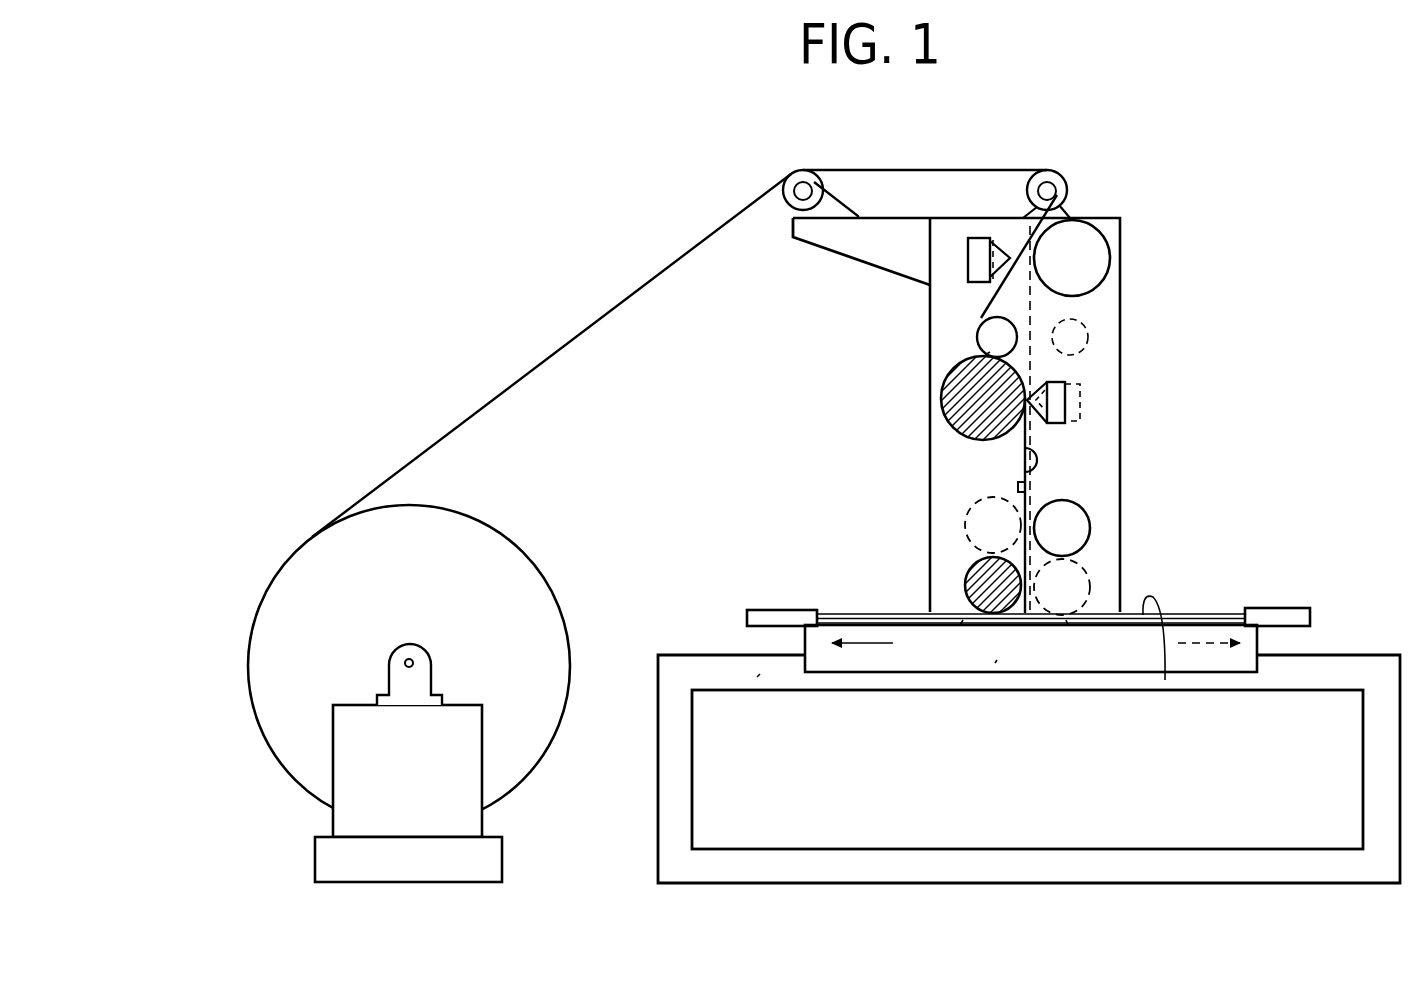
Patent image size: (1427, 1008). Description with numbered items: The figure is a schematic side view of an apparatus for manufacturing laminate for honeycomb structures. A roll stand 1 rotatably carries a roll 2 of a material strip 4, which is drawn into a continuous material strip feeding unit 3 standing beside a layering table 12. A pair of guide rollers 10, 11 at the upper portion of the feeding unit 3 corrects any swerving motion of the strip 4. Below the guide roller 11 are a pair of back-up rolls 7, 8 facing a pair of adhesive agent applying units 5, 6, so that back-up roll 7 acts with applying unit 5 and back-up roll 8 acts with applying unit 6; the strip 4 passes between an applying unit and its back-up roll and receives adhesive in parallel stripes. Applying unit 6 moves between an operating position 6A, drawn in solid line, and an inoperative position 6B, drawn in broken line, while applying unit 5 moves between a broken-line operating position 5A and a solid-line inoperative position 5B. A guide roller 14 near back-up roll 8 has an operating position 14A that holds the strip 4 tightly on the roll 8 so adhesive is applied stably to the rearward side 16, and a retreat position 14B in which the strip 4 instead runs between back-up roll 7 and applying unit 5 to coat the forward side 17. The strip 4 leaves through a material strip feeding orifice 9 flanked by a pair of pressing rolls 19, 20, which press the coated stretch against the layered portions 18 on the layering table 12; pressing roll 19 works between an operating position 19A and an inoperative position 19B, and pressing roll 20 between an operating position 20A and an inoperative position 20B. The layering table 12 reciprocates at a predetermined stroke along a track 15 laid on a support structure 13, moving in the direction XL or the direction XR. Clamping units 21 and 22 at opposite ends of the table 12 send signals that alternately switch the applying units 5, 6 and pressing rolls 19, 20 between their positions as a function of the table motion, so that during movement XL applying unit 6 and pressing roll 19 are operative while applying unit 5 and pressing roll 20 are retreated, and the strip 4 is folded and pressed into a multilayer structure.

The roll stand 1 is at (358, 815).
The roll 2 is at (278, 625).
The continuous material strip feeding unit 3 is at (1114, 213).
The material strip 4 is at (908, 170).
The adhesive agent applying unit 5 is at (923, 219).
The operating position 5A is at (1006, 245).
The inoperative position 5B is at (966, 279).
The adhesive agent applying unit 6 is at (1138, 388).
The operating position 6A is at (1067, 397).
The inoperative position 6B is at (1082, 416).
The back-up roll 7 is at (1088, 252).
The back-up roll 8 is at (955, 400).
The material strip feeding orifice 9 is at (1032, 625).
The guide roller 10 is at (797, 172).
The guide roller 11 is at (1053, 172).
The layering table 12 is at (995, 663).
The support structure 13 is at (757, 677).
The guide roller 14 is at (975, 337).
The operating position 14A is at (985, 355).
The inoperative position 14B is at (1088, 337).
The track 15 is at (718, 653).
The side 16 is at (1020, 462).
The side 17 is at (1030, 478).
The layered portions 18 is at (1165, 680).
The pressing roll 19 is at (955, 563).
The operating position 19A is at (960, 625).
The inoperative position 19B is at (966, 525).
The pressing roll 20 is at (1090, 528).
The operating position 20A is at (1068, 625).
The inoperative position 20B is at (1085, 546).
The clamping unit 21 is at (1298, 618).
The clamping unit 22 is at (758, 612).
The direction of movement XL is at (857, 645).
The direction of movement XR is at (1212, 643).